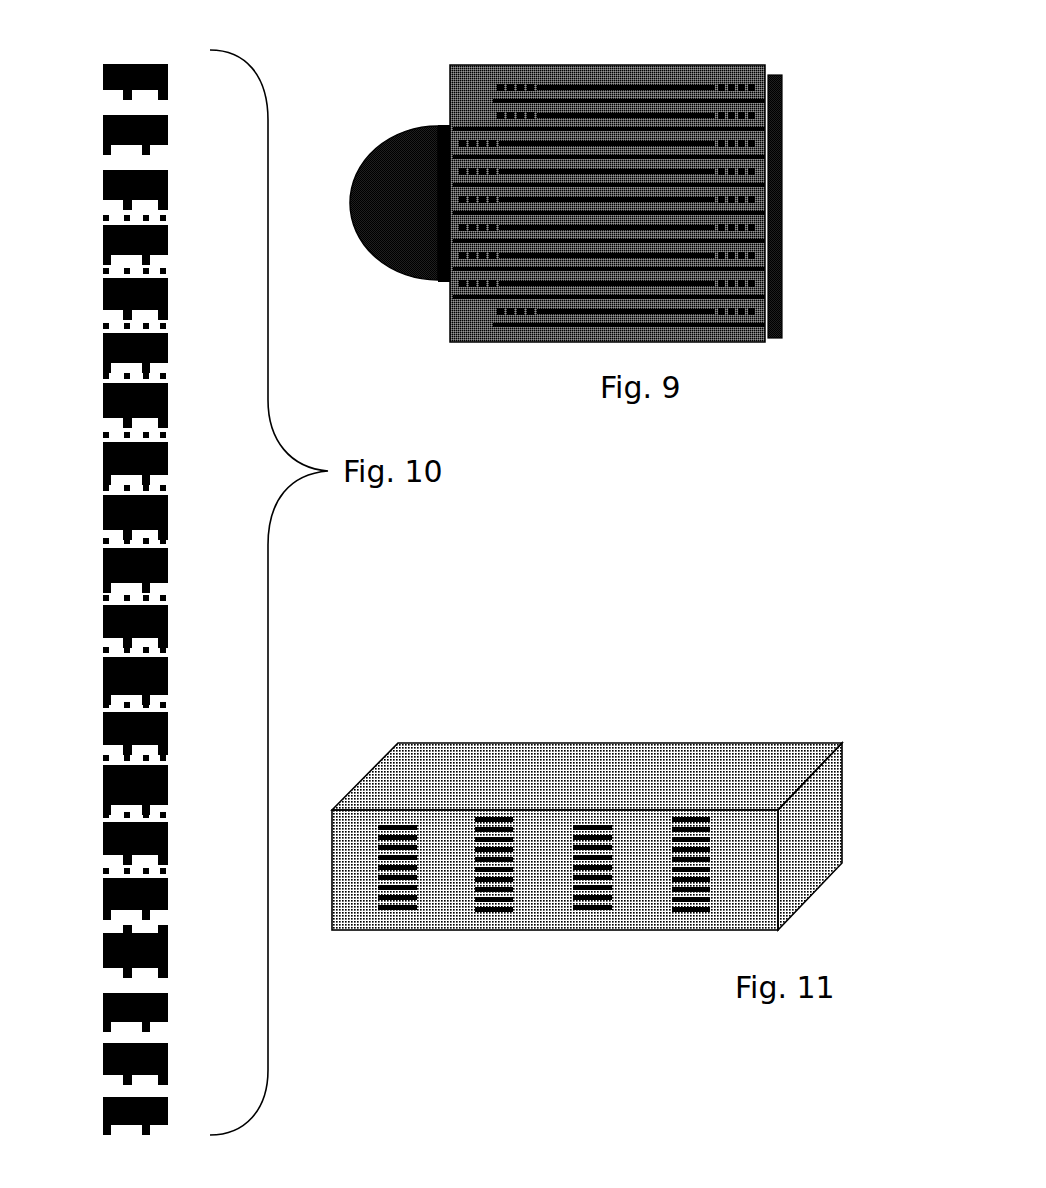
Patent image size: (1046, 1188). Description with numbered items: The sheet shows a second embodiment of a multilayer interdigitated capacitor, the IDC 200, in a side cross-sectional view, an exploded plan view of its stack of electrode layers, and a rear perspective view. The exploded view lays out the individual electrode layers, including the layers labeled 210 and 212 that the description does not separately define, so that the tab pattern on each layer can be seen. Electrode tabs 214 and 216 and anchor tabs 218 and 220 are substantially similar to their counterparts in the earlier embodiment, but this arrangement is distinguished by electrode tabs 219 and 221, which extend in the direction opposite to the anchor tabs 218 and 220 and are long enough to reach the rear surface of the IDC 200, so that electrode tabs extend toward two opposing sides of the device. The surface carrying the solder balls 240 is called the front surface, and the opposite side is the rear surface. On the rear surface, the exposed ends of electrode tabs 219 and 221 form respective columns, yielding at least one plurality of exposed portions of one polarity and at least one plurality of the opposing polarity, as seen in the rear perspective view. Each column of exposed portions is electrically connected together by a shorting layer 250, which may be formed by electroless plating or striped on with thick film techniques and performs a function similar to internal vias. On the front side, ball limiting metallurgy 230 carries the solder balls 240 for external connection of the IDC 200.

In FIG. 9, the IDC 200 is at (592, 53).
In FIG. 11, the IDC 200 is at (576, 718).
In FIG. 10, the dielectric layer 210 is at (168, 183).
In FIG. 9, the dielectric layer 210 is at (672, 110).
In FIG. 10, the electrode layer 212 is at (168, 343).
In FIG. 9, the electrode layer 212 is at (695, 297).
In FIG. 10, the electrode tab 214 is at (122, 272).
In FIG. 10, the electrode tab 216 is at (103, 540).
In FIG. 9, the electrode tab 216 is at (462, 262).
In FIG. 10, the anchor tab 218 is at (105, 692).
In FIG. 10, the electrode tab 219 is at (107, 918).
In FIG. 9, the electrode tab 219 is at (757, 170).
In FIG. 11, the electrode tab 219 is at (408, 888).
In FIG. 10, the anchor tab 220 is at (167, 760).
In FIG. 10, the electrode tab 221 is at (168, 975).
In FIG. 9, the electrode tab 221 is at (762, 260).
In FIG. 11, the electrode tab 221 is at (693, 875).
In FIG. 9, the ball limiting metallurgy 230 is at (443, 125).
In FIG. 9, the solder balls 240 is at (387, 157).
In FIG. 9, the shorting layers 250 is at (782, 98).